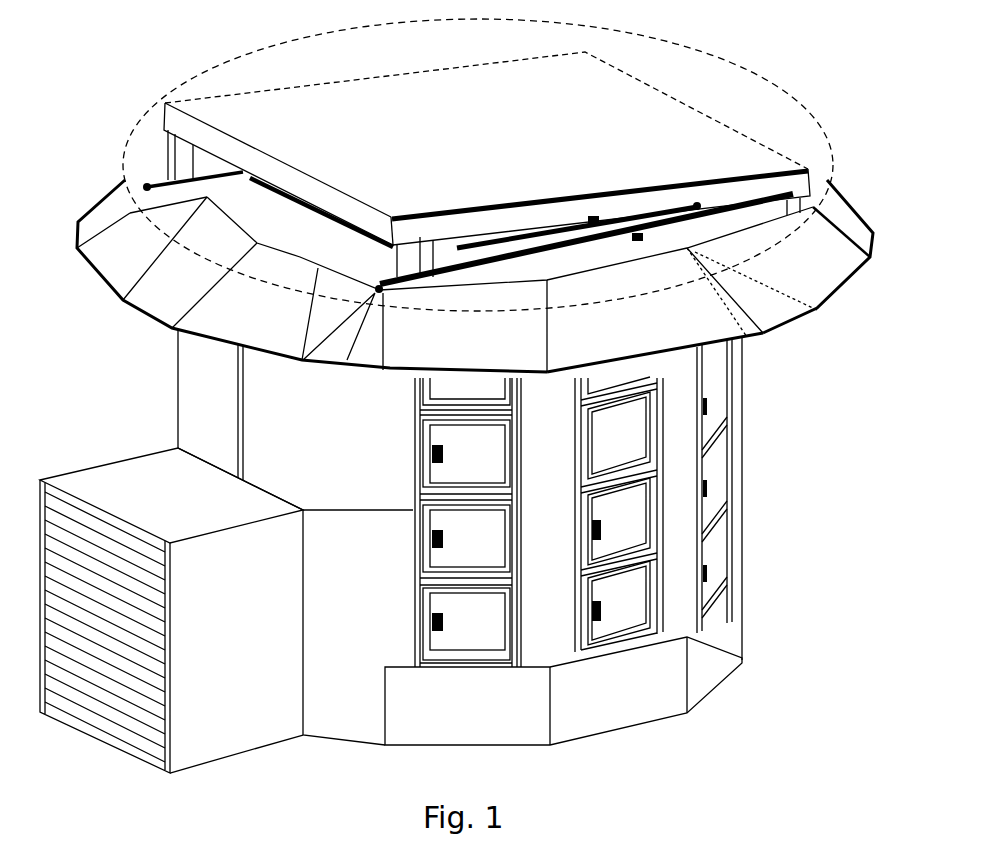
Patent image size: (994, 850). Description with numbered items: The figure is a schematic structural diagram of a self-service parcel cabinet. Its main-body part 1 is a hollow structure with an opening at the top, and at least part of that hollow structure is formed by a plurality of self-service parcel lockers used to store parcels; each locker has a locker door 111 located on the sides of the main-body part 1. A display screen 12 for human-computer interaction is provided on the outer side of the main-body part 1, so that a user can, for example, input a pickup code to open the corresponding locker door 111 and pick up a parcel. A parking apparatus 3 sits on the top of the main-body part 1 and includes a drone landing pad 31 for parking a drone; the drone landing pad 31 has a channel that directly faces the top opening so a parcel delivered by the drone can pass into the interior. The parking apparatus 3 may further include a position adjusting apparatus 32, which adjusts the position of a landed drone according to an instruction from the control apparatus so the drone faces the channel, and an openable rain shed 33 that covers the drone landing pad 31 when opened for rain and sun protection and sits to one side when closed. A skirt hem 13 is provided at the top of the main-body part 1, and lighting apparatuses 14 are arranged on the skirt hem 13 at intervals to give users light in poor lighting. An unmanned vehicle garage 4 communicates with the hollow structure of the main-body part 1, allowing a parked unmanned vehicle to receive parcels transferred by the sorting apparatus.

The main-body part 1 is at (542, 627).
The locker door 111 is at (460, 466).
The display screen 12 is at (620, 441).
The skirt hem 13 is at (828, 265).
The lighting apparatus 14 is at (765, 332).
The parking apparatus 3 is at (727, 60).
The drone landing pad 31 is at (480, 230).
The position adjusting apparatus 32 is at (445, 262).
The rain shed 33 is at (568, 144).
The unmanned vehicle garage 4 is at (58, 420).